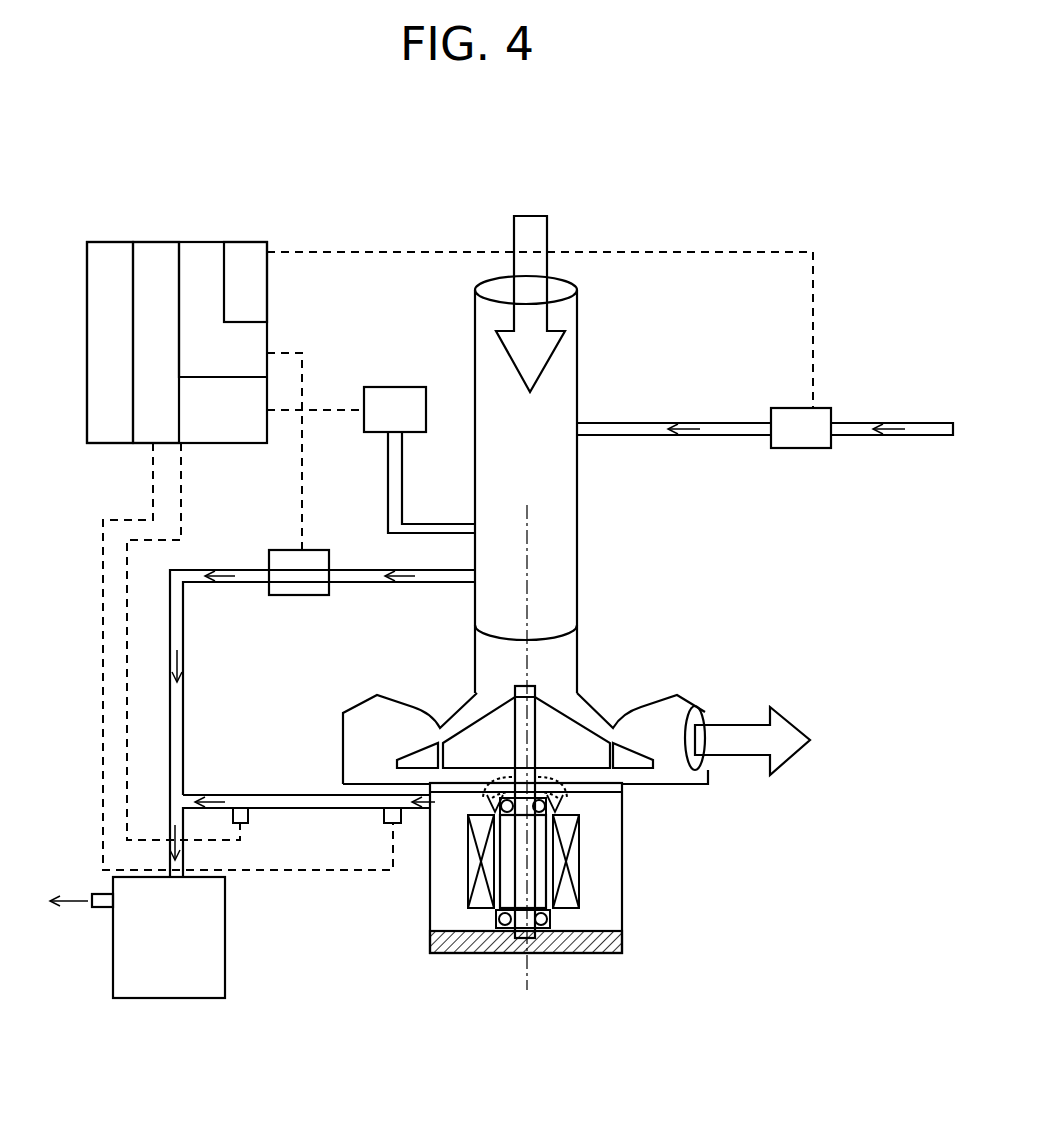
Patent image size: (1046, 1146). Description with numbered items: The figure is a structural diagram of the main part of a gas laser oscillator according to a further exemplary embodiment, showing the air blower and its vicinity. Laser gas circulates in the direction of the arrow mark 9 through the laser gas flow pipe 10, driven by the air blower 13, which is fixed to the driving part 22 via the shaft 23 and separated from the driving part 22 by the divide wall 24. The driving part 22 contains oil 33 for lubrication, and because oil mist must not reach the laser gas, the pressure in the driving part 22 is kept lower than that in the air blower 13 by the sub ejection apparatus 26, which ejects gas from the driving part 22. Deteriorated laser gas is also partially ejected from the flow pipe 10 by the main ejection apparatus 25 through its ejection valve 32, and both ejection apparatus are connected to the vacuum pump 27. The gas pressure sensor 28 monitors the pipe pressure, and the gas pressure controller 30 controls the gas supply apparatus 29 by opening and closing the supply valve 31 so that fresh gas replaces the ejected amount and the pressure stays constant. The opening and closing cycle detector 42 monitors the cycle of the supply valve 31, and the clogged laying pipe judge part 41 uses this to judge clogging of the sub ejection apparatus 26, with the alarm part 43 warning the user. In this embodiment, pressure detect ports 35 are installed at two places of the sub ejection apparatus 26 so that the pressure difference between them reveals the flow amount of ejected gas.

The arrow mark 9 is at (543, 353).
The laser gas flow pipe 10 is at (562, 572).
The air blower 13 is at (590, 750).
The driving part 22 is at (537, 877).
The shaft 23 is at (530, 715).
The divide wall 24 is at (567, 787).
The main ejection apparatus 25 is at (358, 572).
The sub ejection apparatus 26 is at (278, 802).
The vacuum pump 27 is at (208, 957).
The gas pressure sensor 28 is at (384, 400).
The gas supply apparatus 29 is at (939, 432).
The gas pressure controller 30 is at (196, 265).
The supply valve 31 is at (817, 423).
The ejection valve 32 is at (283, 558).
The oil 33 is at (590, 940).
The pressure detect port 35 is at (247, 823).
The clogged laying pipe judge part 41 is at (149, 260).
The opening and closing cycle detector 42 is at (242, 260).
The alarm part 43 is at (107, 258).